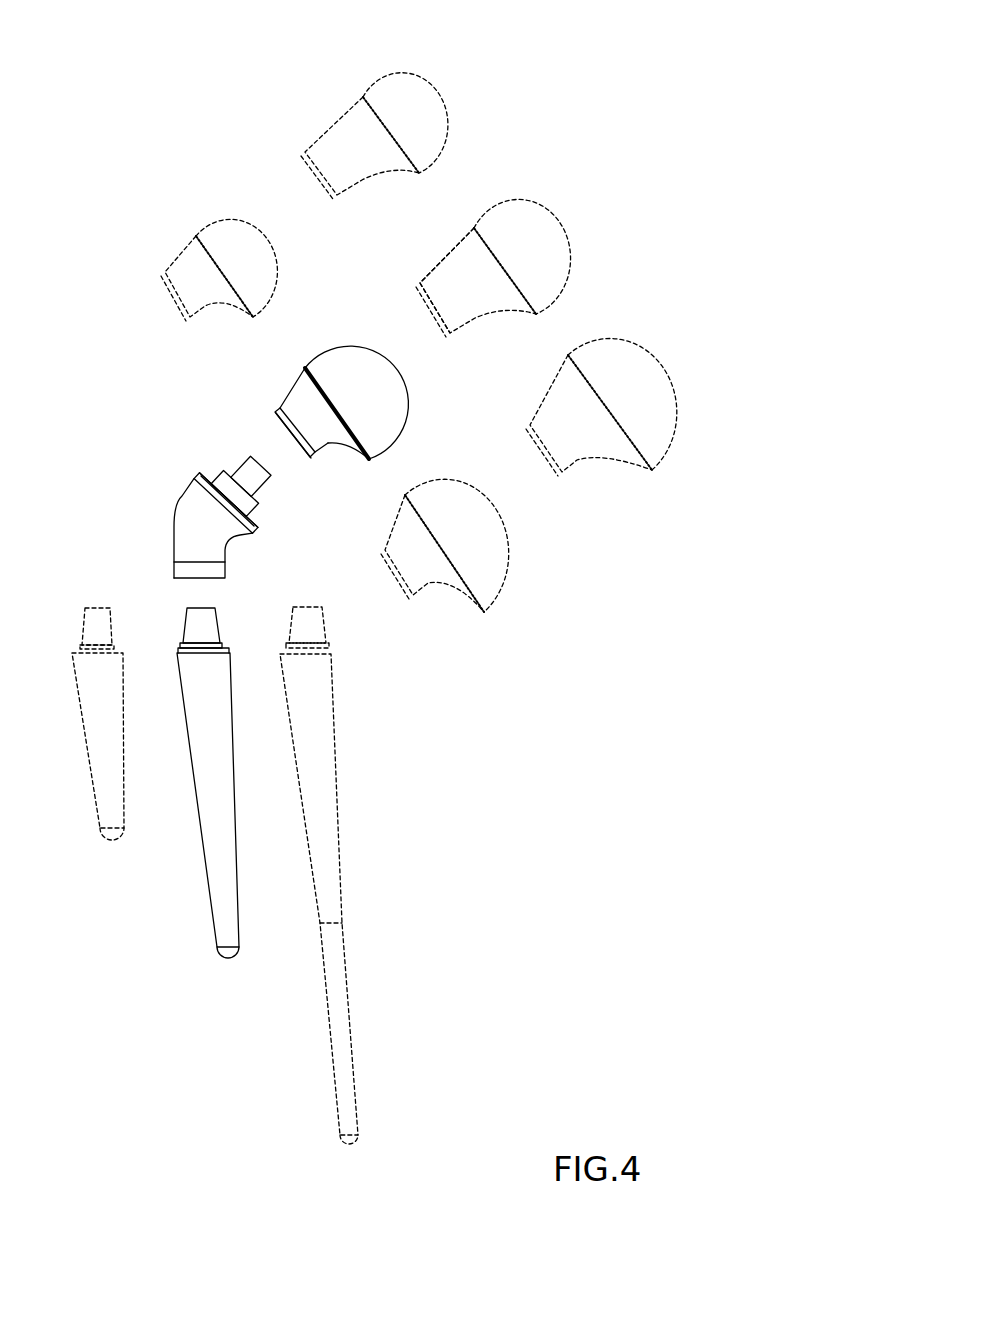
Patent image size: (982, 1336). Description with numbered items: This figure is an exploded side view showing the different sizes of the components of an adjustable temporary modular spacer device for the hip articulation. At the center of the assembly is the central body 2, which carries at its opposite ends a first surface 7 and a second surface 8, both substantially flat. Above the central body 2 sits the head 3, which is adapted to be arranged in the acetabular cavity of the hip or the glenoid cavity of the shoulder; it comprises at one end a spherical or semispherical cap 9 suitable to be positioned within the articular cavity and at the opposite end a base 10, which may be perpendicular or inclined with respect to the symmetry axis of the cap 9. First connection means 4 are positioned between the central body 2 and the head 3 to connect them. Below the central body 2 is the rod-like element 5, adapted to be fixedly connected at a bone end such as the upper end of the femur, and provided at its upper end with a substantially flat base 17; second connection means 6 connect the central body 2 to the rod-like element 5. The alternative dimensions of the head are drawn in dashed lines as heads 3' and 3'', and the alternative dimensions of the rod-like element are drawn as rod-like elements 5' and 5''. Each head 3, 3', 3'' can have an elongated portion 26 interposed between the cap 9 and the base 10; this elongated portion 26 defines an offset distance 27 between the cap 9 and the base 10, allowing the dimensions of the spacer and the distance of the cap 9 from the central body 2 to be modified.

The offset distance 27 is at (363, 97).
The head (first alternative size) 3' is at (406, 111).
The head 3 is at (520, 245).
The head (second alternative size) 3'' is at (634, 380).
The elongated portion 26 is at (293, 400).
The cap 9 is at (374, 362).
The base 10 is at (308, 458).
The first connection means 4 is at (216, 475).
The central body 2 is at (173, 518).
The first surface 7 is at (260, 500).
The second surface 8 is at (218, 582).
The second connection means 6 is at (192, 759).
The flat base 17 is at (226, 651).
The rod-like element 5 is at (221, 784).
The rod-like element (first alternative size) 5' is at (87, 730).
The rod-like element (second alternative size) 5'' is at (352, 875).